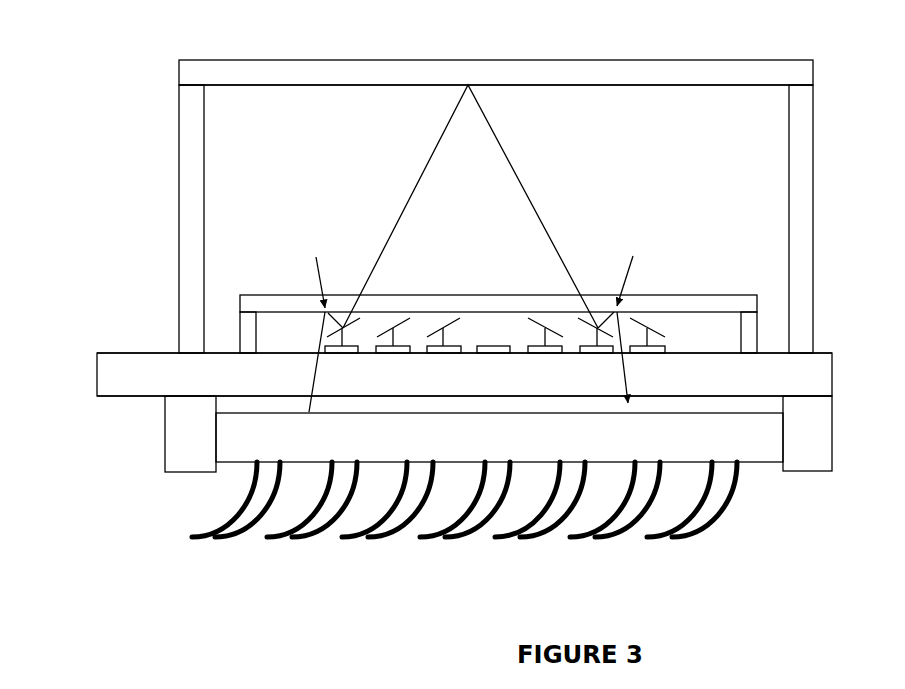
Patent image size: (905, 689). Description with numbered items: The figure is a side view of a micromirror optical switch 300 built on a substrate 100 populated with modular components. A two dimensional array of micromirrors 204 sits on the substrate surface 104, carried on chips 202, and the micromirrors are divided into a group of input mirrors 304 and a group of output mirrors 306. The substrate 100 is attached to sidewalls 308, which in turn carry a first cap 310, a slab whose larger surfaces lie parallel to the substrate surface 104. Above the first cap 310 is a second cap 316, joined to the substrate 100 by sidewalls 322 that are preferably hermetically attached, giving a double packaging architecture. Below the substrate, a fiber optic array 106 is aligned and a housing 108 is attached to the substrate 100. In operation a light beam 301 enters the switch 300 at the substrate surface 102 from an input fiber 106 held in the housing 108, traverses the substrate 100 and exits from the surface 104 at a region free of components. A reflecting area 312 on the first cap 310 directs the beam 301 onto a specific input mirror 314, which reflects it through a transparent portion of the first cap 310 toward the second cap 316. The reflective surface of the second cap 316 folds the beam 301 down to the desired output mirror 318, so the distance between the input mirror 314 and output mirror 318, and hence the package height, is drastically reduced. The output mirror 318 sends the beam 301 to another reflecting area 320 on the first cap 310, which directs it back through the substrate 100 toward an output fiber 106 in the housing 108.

The substrate 100 is at (95, 380).
The substrate surface 102 is at (124, 397).
The substrate surface 104 is at (133, 352).
The fiber optic array 106 is at (395, 597).
The housing 108 is at (238, 438).
The chips 202 is at (670, 348).
The micromirrors 204 is at (662, 328).
The switch 300 is at (472, 34).
The light beam 301 is at (398, 218).
The input mirrors 304 is at (461, 362).
The output mirrors 306 is at (663, 362).
The sidewalls 308 is at (760, 317).
The first cap 310 is at (238, 303).
The reflecting area 312 is at (318, 325).
The input mirror 314 is at (363, 316).
The second cap 316 is at (176, 74).
The output mirror 318 is at (576, 316).
The reflecting area 320 is at (635, 319).
The sidewalls 322 is at (176, 127).